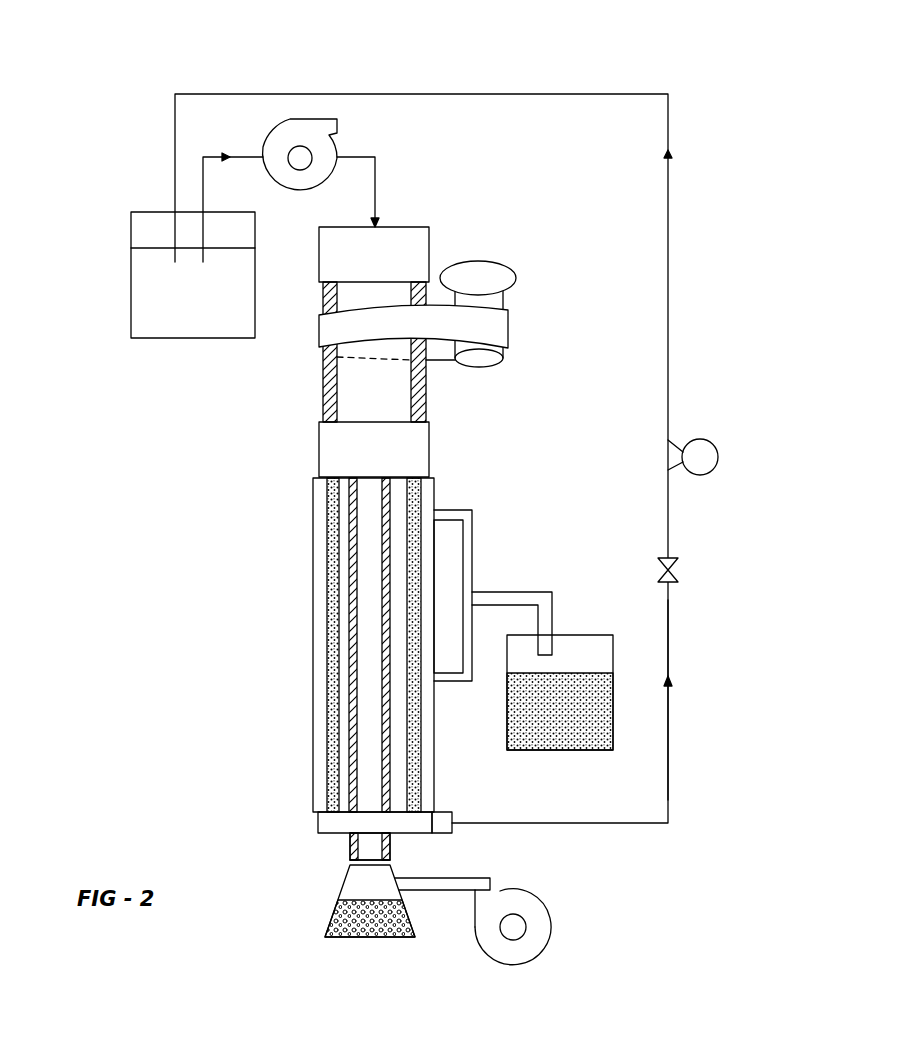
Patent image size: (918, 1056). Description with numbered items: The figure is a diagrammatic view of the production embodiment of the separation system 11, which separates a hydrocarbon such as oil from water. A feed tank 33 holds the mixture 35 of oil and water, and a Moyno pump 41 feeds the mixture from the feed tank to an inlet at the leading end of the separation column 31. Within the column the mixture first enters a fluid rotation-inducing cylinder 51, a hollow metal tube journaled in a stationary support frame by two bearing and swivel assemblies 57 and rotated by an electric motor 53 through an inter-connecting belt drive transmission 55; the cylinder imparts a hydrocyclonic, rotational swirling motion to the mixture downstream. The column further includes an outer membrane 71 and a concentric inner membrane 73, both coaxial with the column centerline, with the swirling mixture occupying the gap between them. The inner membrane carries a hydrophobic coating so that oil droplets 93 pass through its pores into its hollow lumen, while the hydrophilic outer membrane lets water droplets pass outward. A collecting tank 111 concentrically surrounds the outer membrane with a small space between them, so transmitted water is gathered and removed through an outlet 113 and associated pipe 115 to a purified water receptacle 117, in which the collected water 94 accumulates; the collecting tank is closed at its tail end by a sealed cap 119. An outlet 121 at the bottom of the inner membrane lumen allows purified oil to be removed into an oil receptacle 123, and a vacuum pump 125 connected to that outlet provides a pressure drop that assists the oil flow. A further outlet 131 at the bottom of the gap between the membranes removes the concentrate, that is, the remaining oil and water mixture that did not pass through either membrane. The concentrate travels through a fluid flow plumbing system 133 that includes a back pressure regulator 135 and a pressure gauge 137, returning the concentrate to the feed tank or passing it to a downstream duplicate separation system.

The separation system 11 is at (550, 46).
The separation column 31 is at (349, 502).
The feed tank 33 is at (217, 338).
The mixture 35 is at (155, 327).
The Moyno pump 41 is at (277, 133).
The fluid rotation-inducing cylinder 51 is at (323, 375).
The electric motor 53 is at (500, 305).
The belt drive transmission 55 is at (497, 328).
The bearing and swivel assemblies 57 is at (412, 240).
The outer membrane 71 is at (327, 593).
The inner membrane 73 is at (353, 527).
The oil droplets 93 is at (375, 925).
The collected liquid 94 is at (592, 718).
The collecting tank 111 is at (313, 642).
The outlet 113 is at (433, 682).
The pipe 115 is at (472, 538).
The purified water receptacle 117 is at (578, 643).
The sealed cap 119 is at (323, 823).
The outlet 121 is at (380, 836).
The oil receptacle 123 is at (330, 918).
The vacuum pump 125 is at (535, 905).
The outlet 131 is at (442, 815).
The fluid flow plumbing system 133 is at (668, 627).
The back pressure regulator 135 is at (675, 568).
The pressure gauge 137 is at (703, 447).